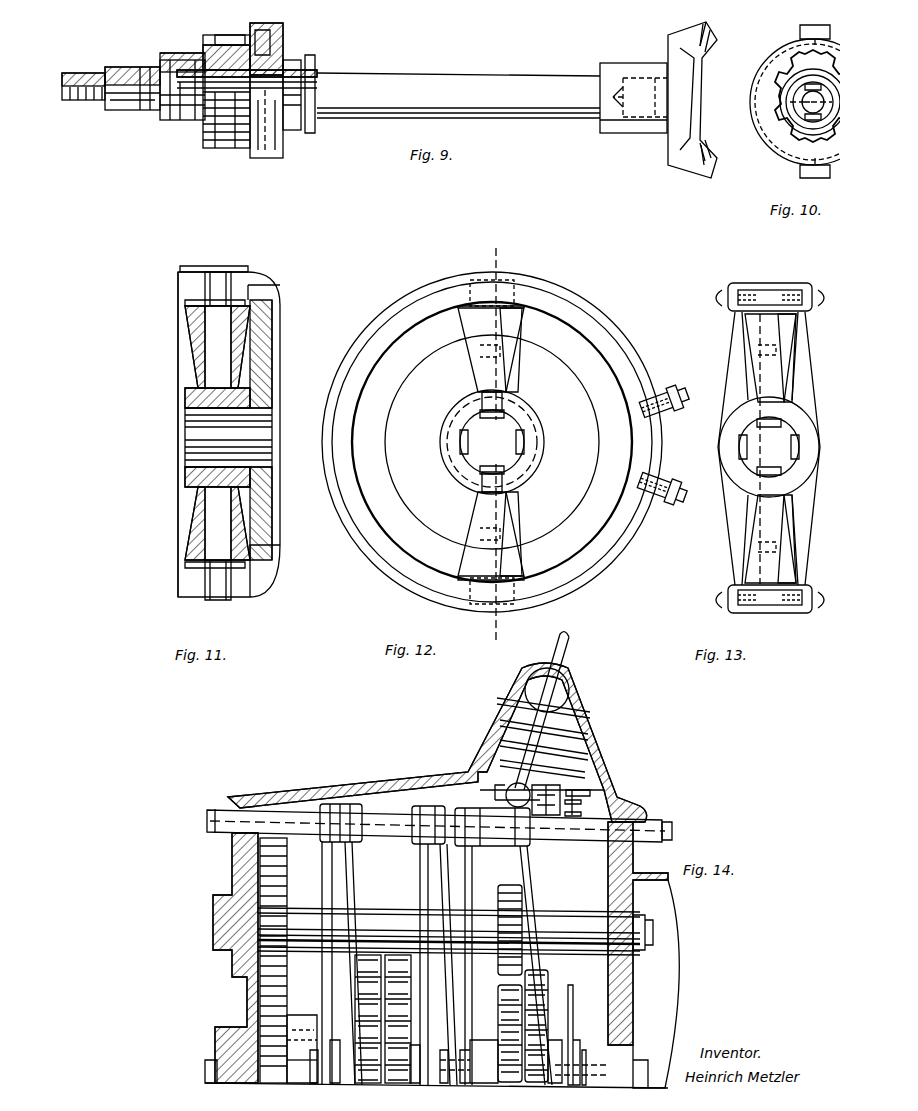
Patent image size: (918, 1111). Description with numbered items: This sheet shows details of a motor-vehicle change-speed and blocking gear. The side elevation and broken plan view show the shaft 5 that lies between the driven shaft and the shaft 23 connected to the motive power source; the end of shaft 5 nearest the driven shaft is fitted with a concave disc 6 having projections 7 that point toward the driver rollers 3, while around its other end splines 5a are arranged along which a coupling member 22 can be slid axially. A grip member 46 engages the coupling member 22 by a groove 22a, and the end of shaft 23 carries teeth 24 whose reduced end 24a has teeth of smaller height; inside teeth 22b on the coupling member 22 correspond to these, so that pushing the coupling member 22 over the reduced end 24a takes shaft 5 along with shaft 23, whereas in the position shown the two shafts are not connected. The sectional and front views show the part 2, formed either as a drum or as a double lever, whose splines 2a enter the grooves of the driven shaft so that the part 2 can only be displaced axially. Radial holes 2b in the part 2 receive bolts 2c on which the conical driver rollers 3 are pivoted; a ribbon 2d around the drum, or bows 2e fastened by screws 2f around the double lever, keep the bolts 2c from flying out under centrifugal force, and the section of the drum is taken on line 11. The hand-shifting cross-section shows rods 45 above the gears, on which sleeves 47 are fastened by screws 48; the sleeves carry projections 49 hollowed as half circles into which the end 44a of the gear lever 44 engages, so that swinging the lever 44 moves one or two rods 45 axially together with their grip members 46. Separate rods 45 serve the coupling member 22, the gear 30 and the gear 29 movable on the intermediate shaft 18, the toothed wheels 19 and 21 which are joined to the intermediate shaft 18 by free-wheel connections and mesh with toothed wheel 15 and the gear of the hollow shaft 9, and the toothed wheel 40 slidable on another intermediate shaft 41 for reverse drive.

In FIG. 11, the part 2 is at (260, 595).
In FIG. 12, the part 2 is at (408, 320).
In FIG. 13, the part 2 is at (738, 355).
In FIG. 11, the splines 2a is at (185, 458).
In FIG. 12, the splines 2a is at (492, 442).
In FIG. 13, the splines 2a is at (769, 447).
In FIG. 11, the holes 2b is at (188, 396).
In FIG. 11, the bolts 2c is at (214, 272).
In FIG. 11, the ribbon 2d is at (244, 268).
In FIG. 12, the ribbon 2d is at (438, 294).
In FIG. 12, the bows 2e is at (663, 444).
In FIG. 13, the bows 2e is at (751, 285).
In FIG. 13, the screws 2f is at (726, 298).
In FIG. 11, the driver rollers 3 is at (185, 306).
In FIG. 12, the driver rollers 3 is at (466, 304).
In FIG. 13, the driver rollers 3 is at (748, 320).
In FIG. 9, the shaft 5 is at (400, 83).
In FIG. 9, the splines 5a is at (320, 81).
In FIG. 9, the concave disc 6 is at (676, 47).
In FIG. 9, the projections 7 is at (702, 24).
In FIG. 10, the projections 7 is at (807, 44).
In FIG. 14, the projections 7 is at (666, 998).
In FIG. 10, the hollow shaft 9 is at (794, 102).
In FIG. 12, the section line 11 is at (494, 441).
In FIG. 14, the toothed wheel 15 is at (536, 1018).
In FIG. 14, the intermediate shaft 18 is at (455, 1082).
In FIG. 14, the toothed wheel 19 is at (537, 1082).
In FIG. 14, the toothed wheel 21 is at (400, 1082).
In FIG. 9, the coupling member 22 is at (275, 36).
In FIG. 10, the coupling member 22 is at (784, 54).
In FIG. 14, the coupling member 22 is at (300, 1014).
In FIG. 9, the groove 22a is at (295, 60).
In FIG. 9, the inside teeth 22b is at (258, 30).
In FIG. 10, the inside teeth 22b is at (764, 86).
In FIG. 9, the shaft 23 is at (120, 68).
In FIG. 10, the shaft 23 is at (777, 122).
In FIG. 9, the teeth 24 is at (206, 40).
In FIG. 10, the teeth 24 is at (790, 156).
In FIG. 14, the teeth 24 is at (270, 1070).
In FIG. 9, the reduced end 24a is at (242, 41).
In FIG. 14, the gear 29 is at (510, 1082).
In FIG. 14, the gear 30 is at (368, 1082).
In FIG. 14, the toothed wheels 40 is at (514, 888).
In FIG. 14, the intermediate shaft 41 is at (593, 923).
In FIG. 14, the gear-lever 44 is at (569, 645).
In FIG. 14, the end of gear-lever 44a is at (506, 793).
In FIG. 14, the rods 45 is at (672, 828).
In FIG. 14, the grip-members 46 is at (340, 860).
In FIG. 14, the sleeves 47 is at (582, 809).
In FIG. 14, the screws 48 is at (581, 793).
In FIG. 14, the projections 49 is at (546, 791).